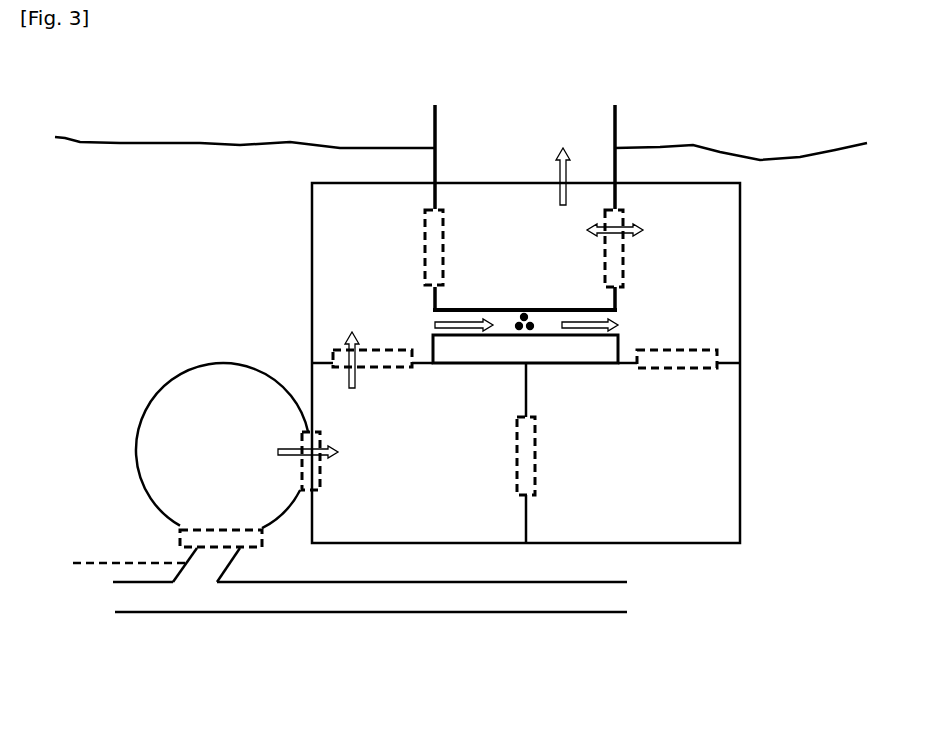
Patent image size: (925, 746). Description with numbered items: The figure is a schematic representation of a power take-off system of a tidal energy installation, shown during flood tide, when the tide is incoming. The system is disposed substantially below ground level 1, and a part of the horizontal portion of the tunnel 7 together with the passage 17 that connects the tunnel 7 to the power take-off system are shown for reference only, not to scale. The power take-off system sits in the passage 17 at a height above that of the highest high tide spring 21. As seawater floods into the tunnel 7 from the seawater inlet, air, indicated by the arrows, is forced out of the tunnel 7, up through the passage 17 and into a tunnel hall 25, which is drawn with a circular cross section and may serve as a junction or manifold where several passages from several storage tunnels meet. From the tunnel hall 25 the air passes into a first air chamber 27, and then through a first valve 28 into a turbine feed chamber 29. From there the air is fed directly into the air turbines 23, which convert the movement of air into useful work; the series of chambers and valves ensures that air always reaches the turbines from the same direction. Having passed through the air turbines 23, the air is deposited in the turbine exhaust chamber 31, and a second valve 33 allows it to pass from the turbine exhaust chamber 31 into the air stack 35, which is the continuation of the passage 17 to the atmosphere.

The ground level 1 is at (225, 233).
The tunnel 7 is at (150, 588).
The passage 17 is at (183, 568).
The highest high tide spring 21 is at (98, 567).
The air turbines 23 is at (527, 323).
The tunnel hall 25 is at (262, 497).
The first air chamber 27 is at (478, 525).
The first valve 28 is at (333, 348).
The turbine feed chamber 29 is at (400, 258).
The turbine exhaust chamber 31 is at (725, 293).
The second valve 33 is at (620, 258).
The air stack 35 is at (588, 157).